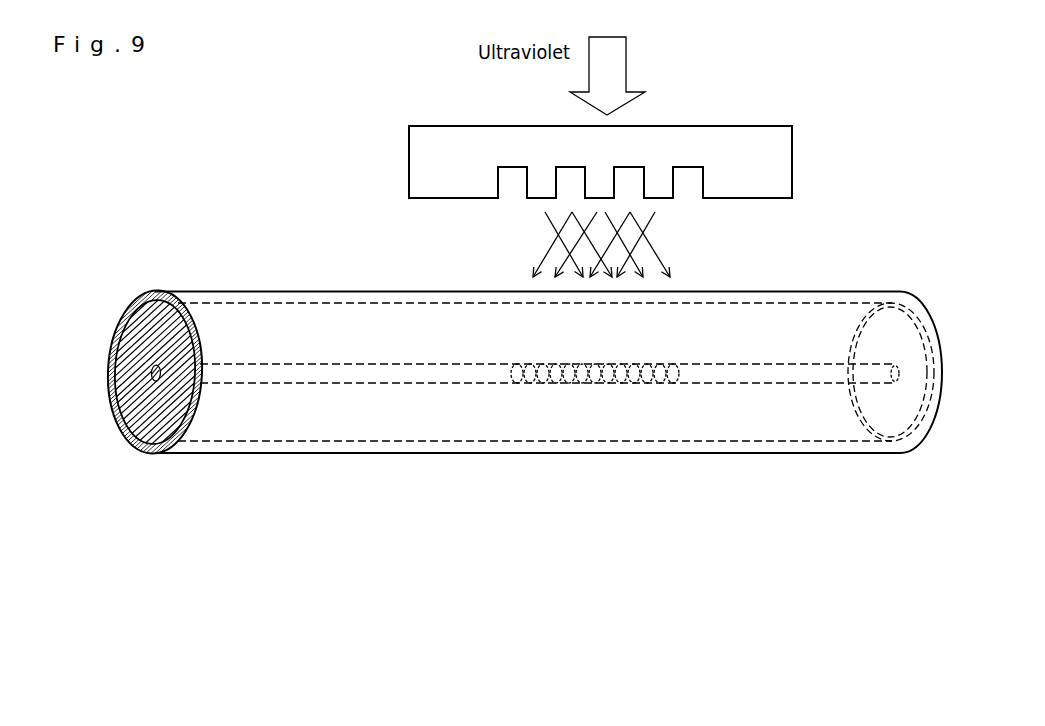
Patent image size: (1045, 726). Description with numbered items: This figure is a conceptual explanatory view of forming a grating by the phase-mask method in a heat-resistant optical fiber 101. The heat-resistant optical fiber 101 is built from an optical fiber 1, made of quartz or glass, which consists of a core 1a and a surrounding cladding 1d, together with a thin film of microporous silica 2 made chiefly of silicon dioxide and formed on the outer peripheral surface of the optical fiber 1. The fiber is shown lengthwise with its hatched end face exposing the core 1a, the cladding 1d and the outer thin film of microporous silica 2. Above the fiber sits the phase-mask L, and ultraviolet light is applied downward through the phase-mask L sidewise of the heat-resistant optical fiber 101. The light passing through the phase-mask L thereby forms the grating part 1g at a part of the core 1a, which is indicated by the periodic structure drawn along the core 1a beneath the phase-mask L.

The phase-mask L is at (425, 169).
The heat-resistant optical fiber 101 is at (497, 450).
The optical fiber 1 is at (493, 427).
The core 1a is at (153, 382).
The cladding 1d is at (110, 385).
The grating part 1g is at (516, 387).
The thin film of microporous silica 2 is at (192, 412).